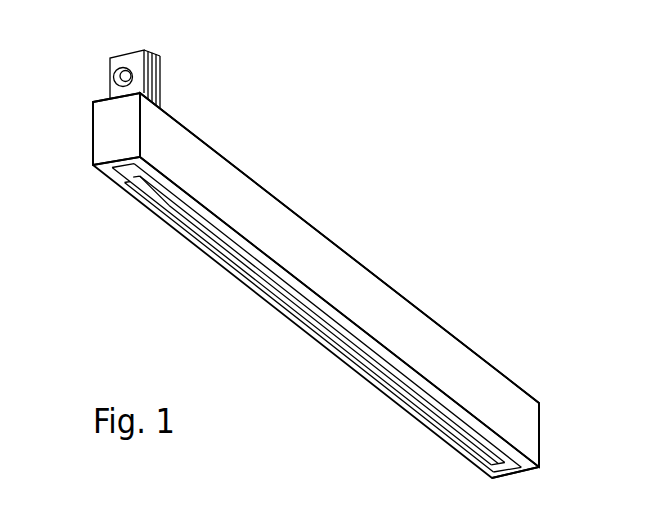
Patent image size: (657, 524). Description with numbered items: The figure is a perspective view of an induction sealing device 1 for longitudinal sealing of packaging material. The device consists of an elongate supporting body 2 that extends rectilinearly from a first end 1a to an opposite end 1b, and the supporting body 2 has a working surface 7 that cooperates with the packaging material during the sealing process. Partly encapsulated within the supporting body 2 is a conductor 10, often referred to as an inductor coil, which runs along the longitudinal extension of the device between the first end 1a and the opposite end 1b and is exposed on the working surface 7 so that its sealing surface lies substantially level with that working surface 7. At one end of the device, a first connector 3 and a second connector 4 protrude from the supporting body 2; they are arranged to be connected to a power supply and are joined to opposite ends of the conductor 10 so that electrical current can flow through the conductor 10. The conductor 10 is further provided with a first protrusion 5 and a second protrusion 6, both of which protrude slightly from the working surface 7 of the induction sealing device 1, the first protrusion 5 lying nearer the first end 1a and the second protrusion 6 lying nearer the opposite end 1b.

The induction sealing device 1 is at (328, 192).
The first end 1a is at (101, 141).
The opposite end 1b is at (541, 443).
The supporting body 2 is at (437, 353).
The first connector 3 is at (133, 58).
The second connector 4 is at (160, 77).
The first protrusion 5 is at (187, 203).
The second protrusion 6 is at (468, 424).
The working surface 7 is at (280, 310).
The conductor 10 is at (235, 262).